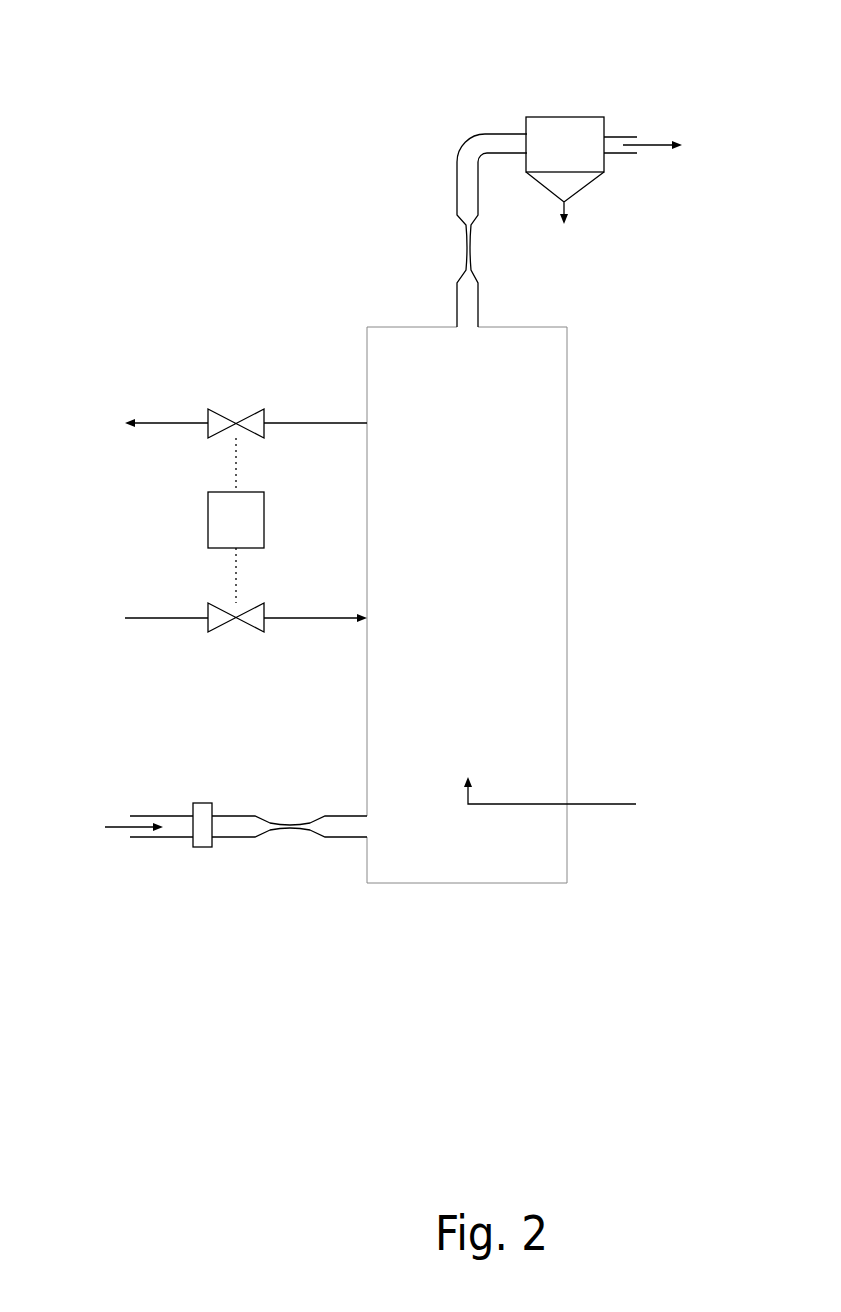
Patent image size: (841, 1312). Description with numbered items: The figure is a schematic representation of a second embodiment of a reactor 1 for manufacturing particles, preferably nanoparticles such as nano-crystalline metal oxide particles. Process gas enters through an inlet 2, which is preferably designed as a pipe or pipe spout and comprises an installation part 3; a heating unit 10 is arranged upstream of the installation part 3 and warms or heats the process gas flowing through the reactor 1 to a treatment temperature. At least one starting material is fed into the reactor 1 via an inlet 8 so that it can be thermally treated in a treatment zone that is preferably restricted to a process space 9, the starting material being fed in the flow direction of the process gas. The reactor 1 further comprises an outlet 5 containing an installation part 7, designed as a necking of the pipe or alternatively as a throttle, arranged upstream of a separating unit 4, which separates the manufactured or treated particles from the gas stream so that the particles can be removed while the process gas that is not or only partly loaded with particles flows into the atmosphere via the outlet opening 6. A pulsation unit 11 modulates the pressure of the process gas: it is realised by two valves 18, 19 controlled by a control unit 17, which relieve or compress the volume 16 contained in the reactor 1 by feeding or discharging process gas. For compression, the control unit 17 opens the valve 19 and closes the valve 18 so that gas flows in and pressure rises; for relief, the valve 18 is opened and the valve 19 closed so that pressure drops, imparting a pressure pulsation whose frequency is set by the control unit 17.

The reactor 1 is at (184, 78).
The inlet 2 is at (226, 925).
The installation part 3 is at (280, 823).
The separating unit 4 is at (566, 116).
The outlet 5 is at (445, 89).
The outlet opening 6 is at (651, 132).
The installation part 7 is at (464, 247).
The inlet 8 is at (613, 805).
The process space 9 is at (568, 568).
The heating unit 10 is at (202, 847).
The pulsation unit 11 is at (200, 366).
The volume 16 is at (557, 367).
The control unit 17 is at (208, 519).
The valve 18 is at (245, 410).
The valve 19 is at (222, 632).